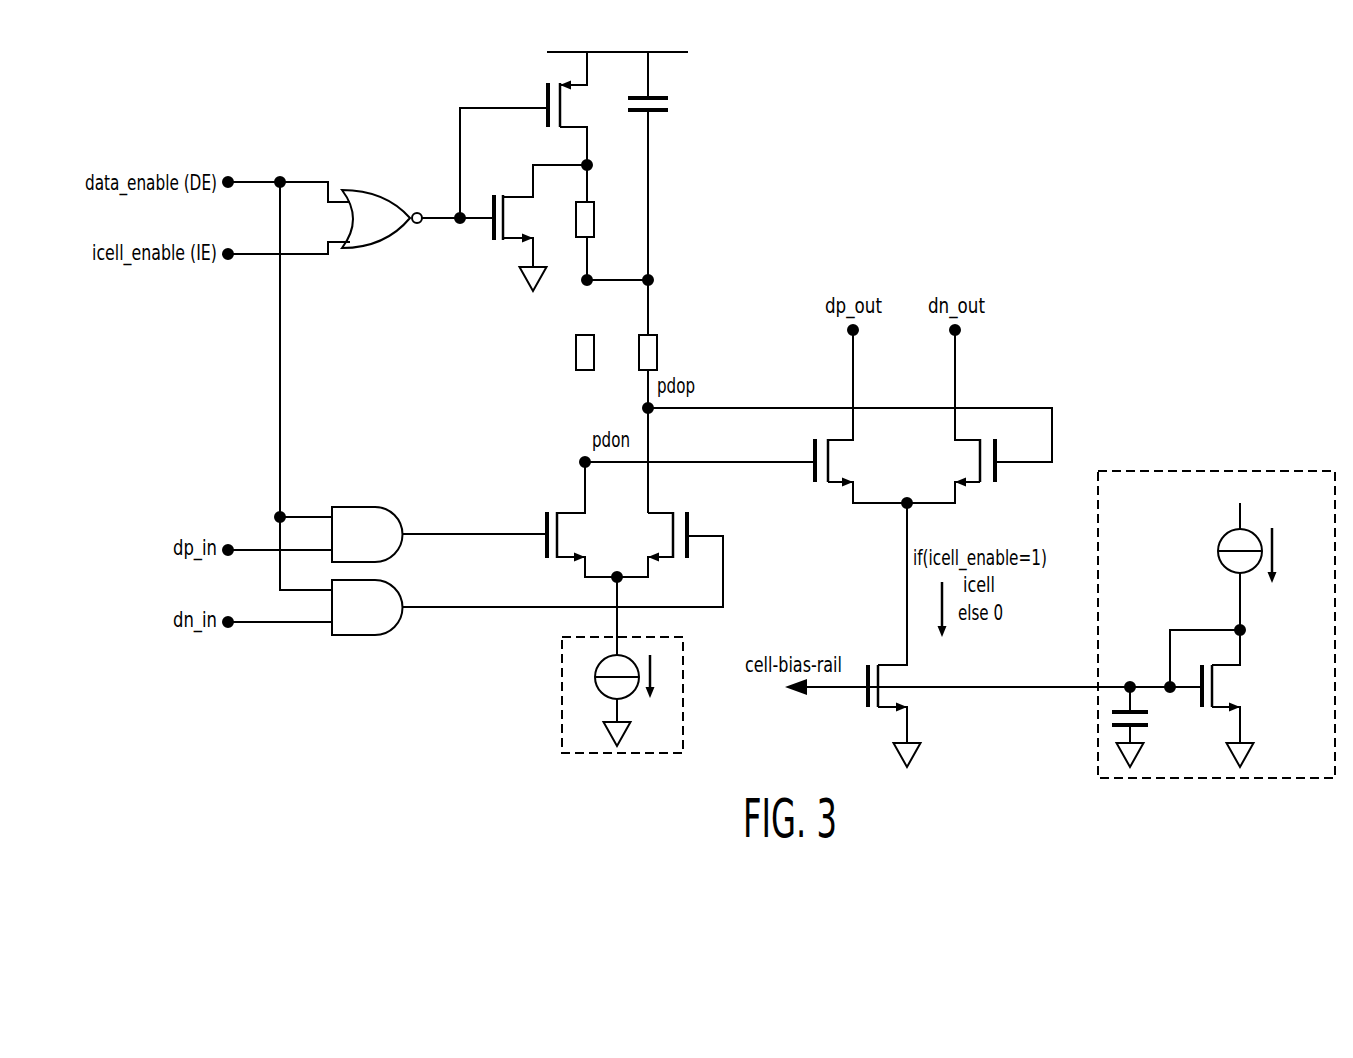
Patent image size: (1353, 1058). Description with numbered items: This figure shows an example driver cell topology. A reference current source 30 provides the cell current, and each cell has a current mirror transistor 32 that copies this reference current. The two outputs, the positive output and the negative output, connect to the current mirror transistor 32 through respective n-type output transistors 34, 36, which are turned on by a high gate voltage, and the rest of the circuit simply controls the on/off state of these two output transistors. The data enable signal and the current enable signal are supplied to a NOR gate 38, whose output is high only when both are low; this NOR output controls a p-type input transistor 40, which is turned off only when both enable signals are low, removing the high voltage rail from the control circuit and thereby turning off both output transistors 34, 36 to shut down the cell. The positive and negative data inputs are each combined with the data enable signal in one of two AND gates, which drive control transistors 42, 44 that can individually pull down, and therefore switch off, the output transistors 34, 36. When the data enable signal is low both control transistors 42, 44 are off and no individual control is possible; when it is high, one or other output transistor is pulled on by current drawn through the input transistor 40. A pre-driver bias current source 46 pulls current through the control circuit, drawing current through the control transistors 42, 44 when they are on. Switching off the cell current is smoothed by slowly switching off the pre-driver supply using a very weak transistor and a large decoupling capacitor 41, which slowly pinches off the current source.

The reference current source 30 is at (1147, 471).
The current mirror transistor 32 is at (885, 665).
The output transistor 34 is at (815, 478).
The output transistor 36 is at (995, 476).
The NOR gate 38 is at (368, 190).
The p-type input transistor 40 is at (547, 97).
The decoupling capacitor 41 is at (660, 112).
The control transistor 42 is at (567, 512).
The control transistor 44 is at (667, 512).
The pre-driver bias current source 46 is at (562, 673).